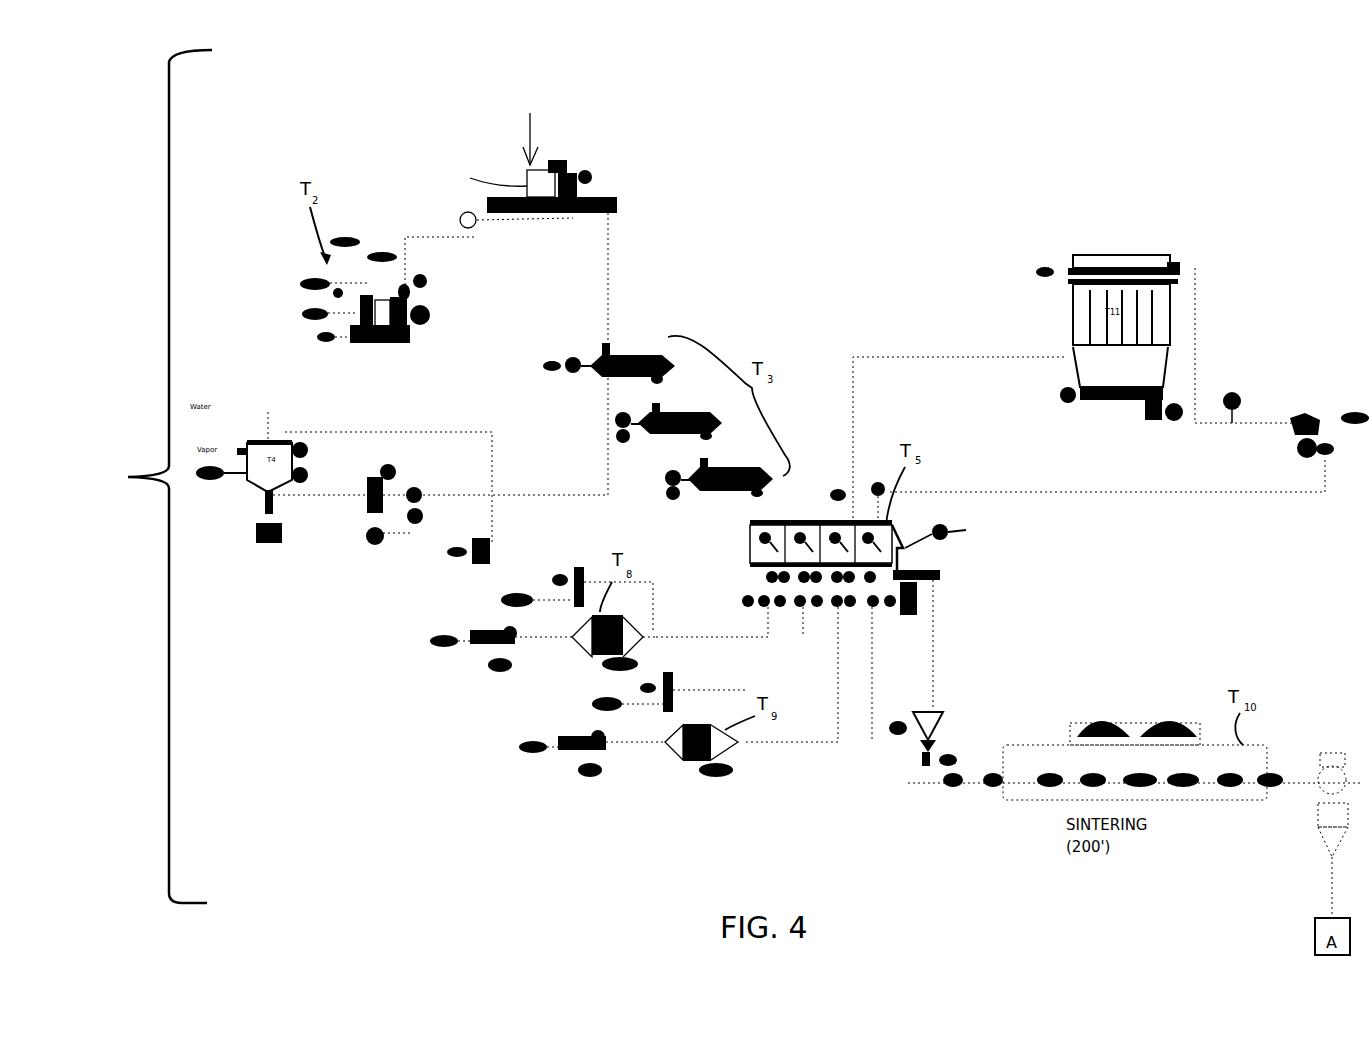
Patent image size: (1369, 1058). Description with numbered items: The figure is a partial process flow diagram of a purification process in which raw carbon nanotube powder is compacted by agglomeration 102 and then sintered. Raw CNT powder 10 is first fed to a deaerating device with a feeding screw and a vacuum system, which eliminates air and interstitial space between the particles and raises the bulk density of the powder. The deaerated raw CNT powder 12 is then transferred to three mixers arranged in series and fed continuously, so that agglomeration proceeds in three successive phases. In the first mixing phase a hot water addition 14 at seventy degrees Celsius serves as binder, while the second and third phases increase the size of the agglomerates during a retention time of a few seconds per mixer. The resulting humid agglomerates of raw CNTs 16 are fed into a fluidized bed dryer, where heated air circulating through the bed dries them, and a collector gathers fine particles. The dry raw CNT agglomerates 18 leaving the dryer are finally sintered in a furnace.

The raw CNT powder 10 is at (558, 85).
The deaerated raw CNT powder 12 is at (610, 272).
The hot water addition 14 is at (540, 496).
The humid agglomerates of raw CNTs 16 is at (757, 502).
The dry raw CNT agglomerates 18 is at (935, 648).
The agglomeration 102 is at (115, 476).